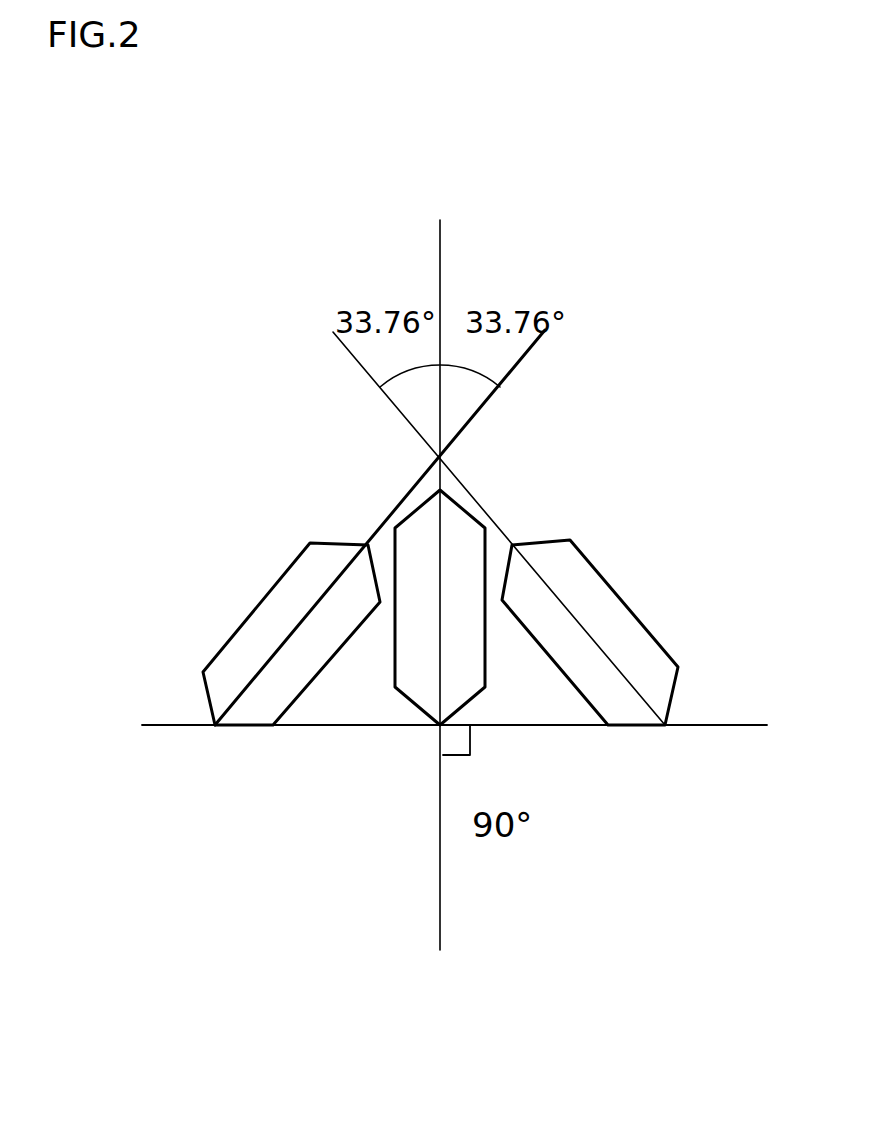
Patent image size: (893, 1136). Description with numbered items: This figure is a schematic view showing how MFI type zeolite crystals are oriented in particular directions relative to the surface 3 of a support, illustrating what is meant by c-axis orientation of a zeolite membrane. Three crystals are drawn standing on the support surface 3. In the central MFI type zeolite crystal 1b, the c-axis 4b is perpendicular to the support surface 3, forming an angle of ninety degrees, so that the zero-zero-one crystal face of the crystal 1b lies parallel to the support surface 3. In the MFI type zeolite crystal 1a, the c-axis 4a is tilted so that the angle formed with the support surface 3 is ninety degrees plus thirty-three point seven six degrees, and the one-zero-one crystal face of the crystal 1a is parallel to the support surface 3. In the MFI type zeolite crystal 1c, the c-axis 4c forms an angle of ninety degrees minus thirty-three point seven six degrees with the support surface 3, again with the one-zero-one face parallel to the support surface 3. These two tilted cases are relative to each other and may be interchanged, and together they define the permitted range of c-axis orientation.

The MFI type zeolite crystal 1a is at (627, 603).
The MFI type zeolite crystal 1b is at (470, 510).
The MFI type zeolite crystal 1c is at (253, 622).
The support surface 3 is at (710, 725).
The c-axis 4a is at (363, 388).
The c-axis 4b is at (440, 252).
The c-axis 4c is at (528, 352).